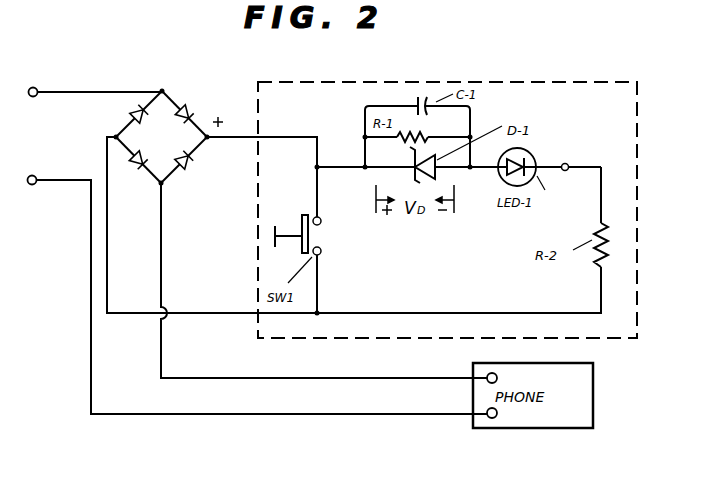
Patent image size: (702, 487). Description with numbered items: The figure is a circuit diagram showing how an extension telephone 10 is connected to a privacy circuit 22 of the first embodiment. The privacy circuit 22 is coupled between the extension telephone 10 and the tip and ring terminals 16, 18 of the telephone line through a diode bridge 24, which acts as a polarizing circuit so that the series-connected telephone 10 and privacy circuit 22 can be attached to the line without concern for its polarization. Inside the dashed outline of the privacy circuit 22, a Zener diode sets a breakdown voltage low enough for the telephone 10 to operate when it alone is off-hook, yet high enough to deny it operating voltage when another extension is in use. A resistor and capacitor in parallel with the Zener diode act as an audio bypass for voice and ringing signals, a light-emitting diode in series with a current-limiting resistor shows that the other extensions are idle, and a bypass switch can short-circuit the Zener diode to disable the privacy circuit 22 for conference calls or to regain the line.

The extension telephone 10 is at (595, 402).
The tip terminal 16 is at (38, 85).
The ring terminal 18 is at (34, 190).
The privacy circuit 22 is at (529, 72).
The diode bridge 24 is at (201, 98).